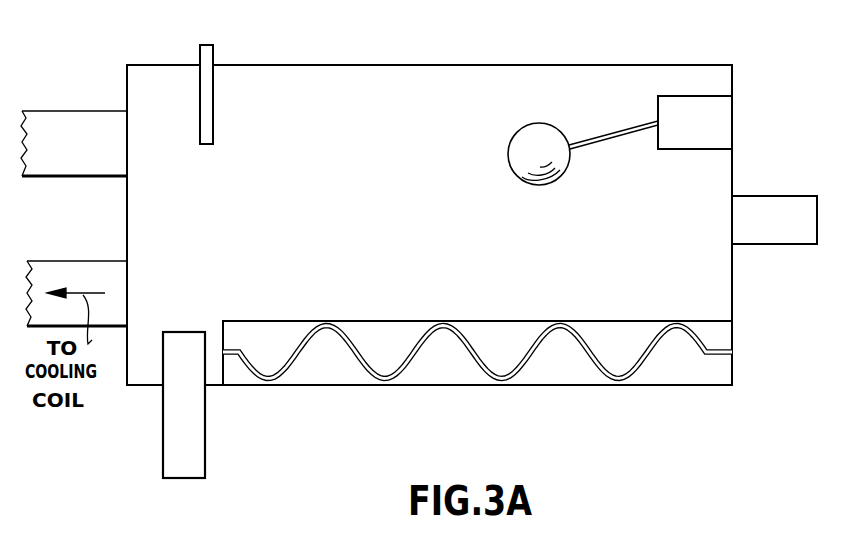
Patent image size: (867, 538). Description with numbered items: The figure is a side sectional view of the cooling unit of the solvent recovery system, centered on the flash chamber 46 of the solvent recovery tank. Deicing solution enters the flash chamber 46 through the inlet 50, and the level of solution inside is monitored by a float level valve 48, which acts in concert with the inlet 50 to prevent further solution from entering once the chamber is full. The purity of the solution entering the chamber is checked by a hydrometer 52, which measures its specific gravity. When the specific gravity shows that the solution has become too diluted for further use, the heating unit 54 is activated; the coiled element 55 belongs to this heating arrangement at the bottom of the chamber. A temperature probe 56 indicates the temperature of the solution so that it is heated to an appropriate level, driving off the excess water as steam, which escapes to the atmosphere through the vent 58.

The flash chamber 46 is at (478, 80).
The float level valve 48 is at (545, 147).
The inlet 50 is at (775, 217).
The hydrometer 52 is at (180, 439).
The heating unit 54 is at (556, 370).
The coil tube 55 is at (305, 353).
The temperature probe 56 is at (209, 112).
The vent 58 is at (83, 158).